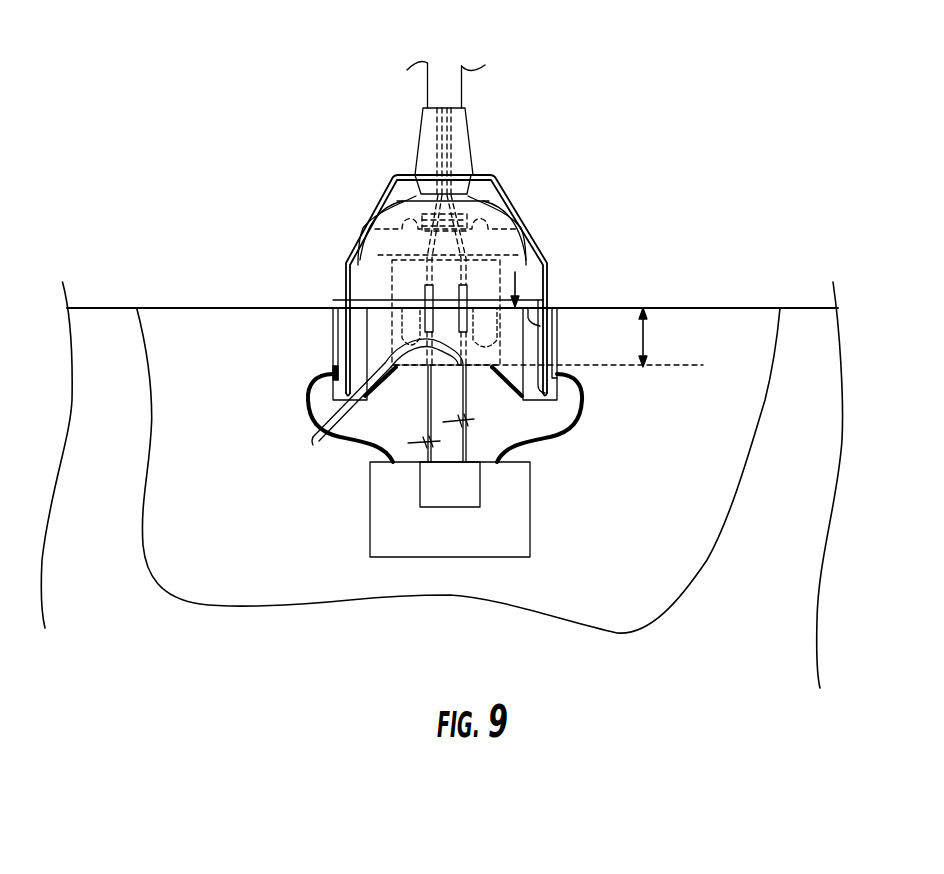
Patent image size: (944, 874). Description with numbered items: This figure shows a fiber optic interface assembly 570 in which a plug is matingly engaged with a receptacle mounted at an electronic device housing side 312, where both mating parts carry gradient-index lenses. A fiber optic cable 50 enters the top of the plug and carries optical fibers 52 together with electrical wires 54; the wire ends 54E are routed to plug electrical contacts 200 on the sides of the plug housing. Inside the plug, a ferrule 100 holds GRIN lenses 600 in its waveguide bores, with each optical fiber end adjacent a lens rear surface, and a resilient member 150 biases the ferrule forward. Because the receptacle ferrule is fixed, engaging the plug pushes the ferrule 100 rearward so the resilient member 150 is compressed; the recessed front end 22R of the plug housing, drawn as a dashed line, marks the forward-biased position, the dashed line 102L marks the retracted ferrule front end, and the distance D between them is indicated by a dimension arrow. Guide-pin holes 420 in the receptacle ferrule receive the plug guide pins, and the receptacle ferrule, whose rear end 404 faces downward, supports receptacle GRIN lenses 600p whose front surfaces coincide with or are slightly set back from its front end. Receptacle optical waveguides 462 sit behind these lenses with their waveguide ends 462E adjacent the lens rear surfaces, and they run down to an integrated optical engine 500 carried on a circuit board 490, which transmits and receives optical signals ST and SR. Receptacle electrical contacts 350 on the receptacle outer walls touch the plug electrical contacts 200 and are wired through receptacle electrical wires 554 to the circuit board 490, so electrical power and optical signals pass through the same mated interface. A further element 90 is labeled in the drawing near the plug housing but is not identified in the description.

The fiber optic interface assembly 570 is at (240, 128).
The fiber optic cable 50 is at (452, 88).
The optical fiber 52 is at (432, 212).
The resilient member 150 is at (492, 206).
The electrical wire 54 is at (380, 206).
The electrical wire end 54E is at (392, 217).
The ferrule 100 is at (405, 282).
The GRIN lens 600 is at (405, 325).
The plug electrical contact 200 is at (343, 343).
The receptacle GRIN lens 600p is at (402, 322).
The dashed line corresponding to ferrule front end 102L is at (556, 308).
The electronic device housing side 312 is at (728, 308).
The fastener 90 is at (334, 327).
The distance D is at (650, 340).
The guide-pin hole 420 is at (408, 352).
The recessed front end of housing 22R is at (665, 367).
The receptacle electrical contact 350 is at (335, 397).
The receptacle electrical wire 554 is at (312, 413).
The receptacle optical waveguide 462 is at (463, 398).
The rear end of receptacle ferrule 404 is at (470, 368).
The receptacle optical waveguide end 462E is at (316, 438).
The transmit optical signal ST is at (474, 423).
The receive optical signal SR is at (413, 442).
The integrated optical engine 500 is at (459, 499).
The circuit board 490 is at (370, 518).